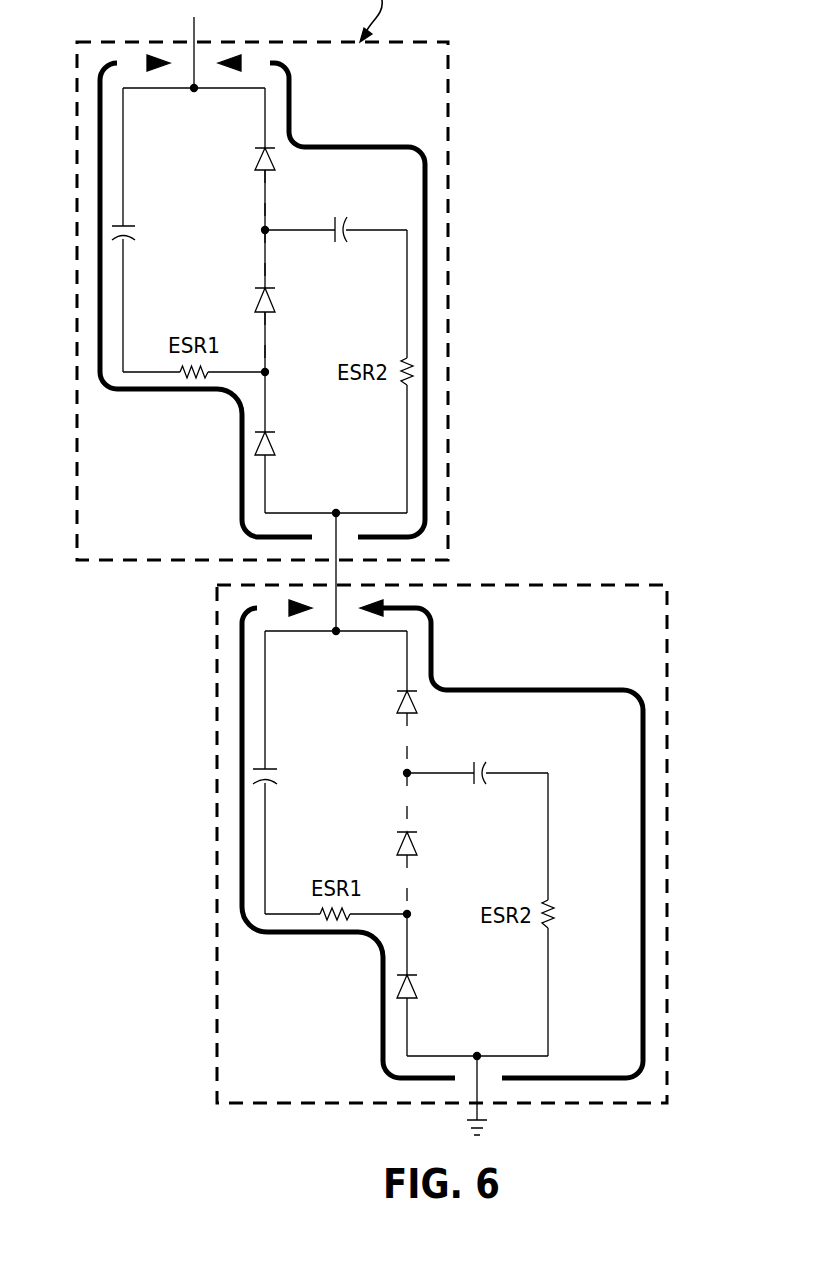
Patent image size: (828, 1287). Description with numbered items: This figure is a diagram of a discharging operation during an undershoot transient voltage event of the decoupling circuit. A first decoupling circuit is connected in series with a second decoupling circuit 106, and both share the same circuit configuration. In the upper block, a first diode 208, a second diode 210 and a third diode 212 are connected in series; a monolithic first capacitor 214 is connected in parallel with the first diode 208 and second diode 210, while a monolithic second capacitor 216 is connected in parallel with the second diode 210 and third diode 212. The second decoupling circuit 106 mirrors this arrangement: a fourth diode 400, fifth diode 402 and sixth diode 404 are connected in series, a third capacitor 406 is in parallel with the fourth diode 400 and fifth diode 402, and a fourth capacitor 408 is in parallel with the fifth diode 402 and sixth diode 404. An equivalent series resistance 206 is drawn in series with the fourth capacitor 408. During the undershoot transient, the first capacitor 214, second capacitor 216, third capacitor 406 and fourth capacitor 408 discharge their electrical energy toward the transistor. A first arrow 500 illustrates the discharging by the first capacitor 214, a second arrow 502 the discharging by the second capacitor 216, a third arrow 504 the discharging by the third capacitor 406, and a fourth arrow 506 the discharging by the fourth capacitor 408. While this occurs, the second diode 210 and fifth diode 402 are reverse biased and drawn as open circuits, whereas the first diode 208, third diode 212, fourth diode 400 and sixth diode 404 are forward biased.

The second decoupling circuit 106 is at (598, 574).
The equivalent series resistance ESR2 206 is at (553, 915).
The first diode 208 is at (255, 158).
The second diode 210 is at (276, 304).
The third diode 212 is at (276, 444).
The first capacitor 214 is at (137, 228).
The second capacitor 216 is at (340, 215).
The fourth diode 400 is at (397, 700).
The fifth diode 402 is at (418, 845).
The sixth diode 404 is at (418, 988).
The third capacitor 406 is at (280, 771).
The fourth capacitor 408 is at (482, 760).
The first arrow 500 is at (165, 392).
The second arrow 502 is at (290, 101).
The third arrow 504 is at (305, 934).
The fourth arrow 506 is at (434, 642).